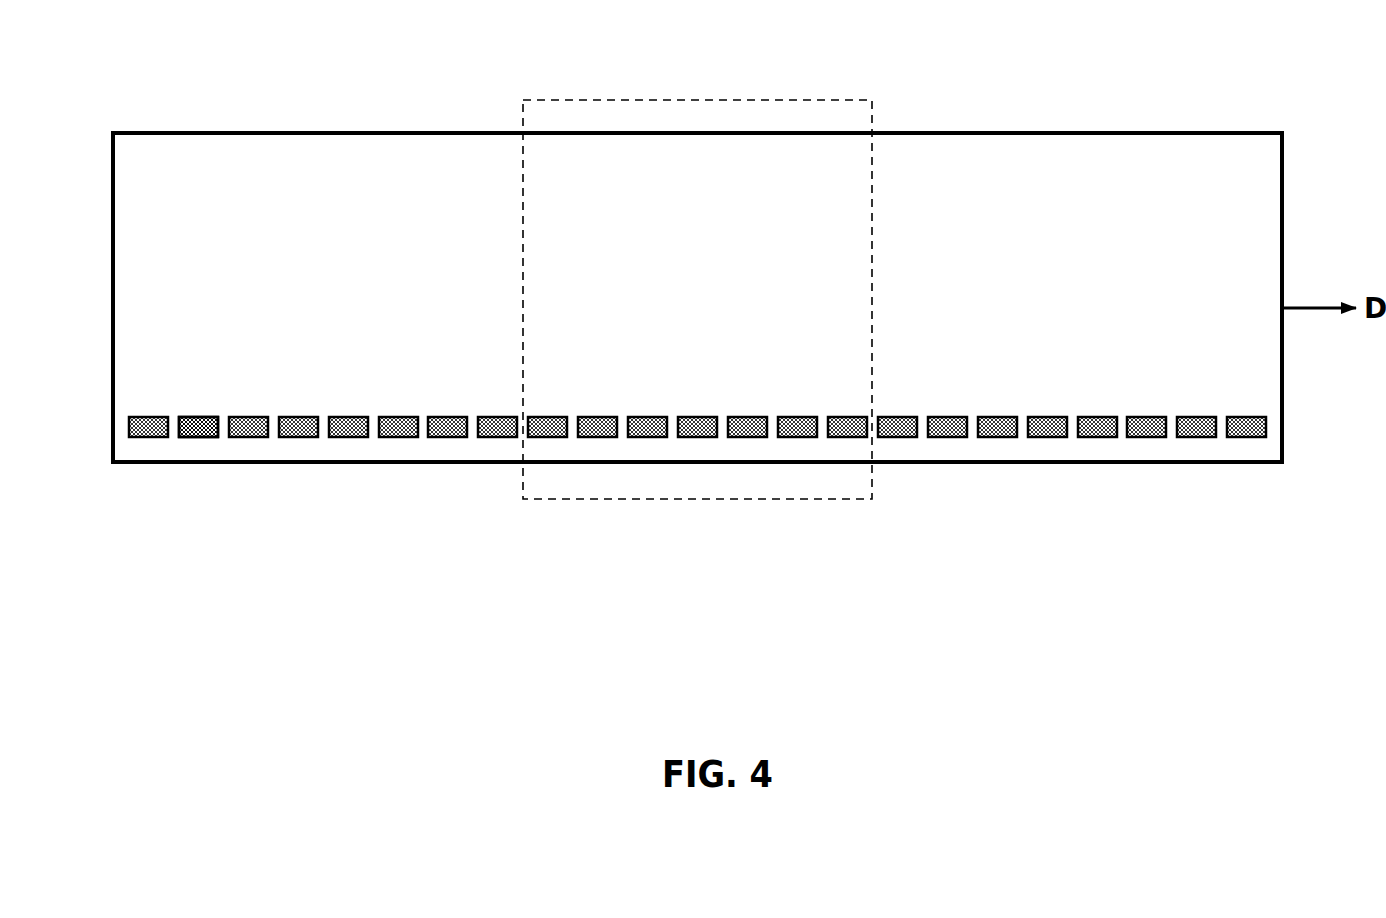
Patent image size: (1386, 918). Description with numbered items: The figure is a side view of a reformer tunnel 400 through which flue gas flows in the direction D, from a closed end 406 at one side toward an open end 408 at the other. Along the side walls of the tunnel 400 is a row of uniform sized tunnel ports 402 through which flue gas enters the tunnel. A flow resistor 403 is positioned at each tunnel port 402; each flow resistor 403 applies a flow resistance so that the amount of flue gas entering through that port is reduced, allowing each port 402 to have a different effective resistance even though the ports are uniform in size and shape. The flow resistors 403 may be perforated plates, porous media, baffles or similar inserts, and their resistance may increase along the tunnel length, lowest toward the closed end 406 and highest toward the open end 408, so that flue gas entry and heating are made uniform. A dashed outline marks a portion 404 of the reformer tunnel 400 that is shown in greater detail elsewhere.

The reformer tunnel 400 is at (1031, 132).
The tunnel ports 402 is at (146, 438).
The flow resistor 403 is at (200, 428).
The portion of the reformer tunnel 404 is at (684, 100).
The closed end 406 is at (111, 190).
The open end 408 is at (1284, 198).